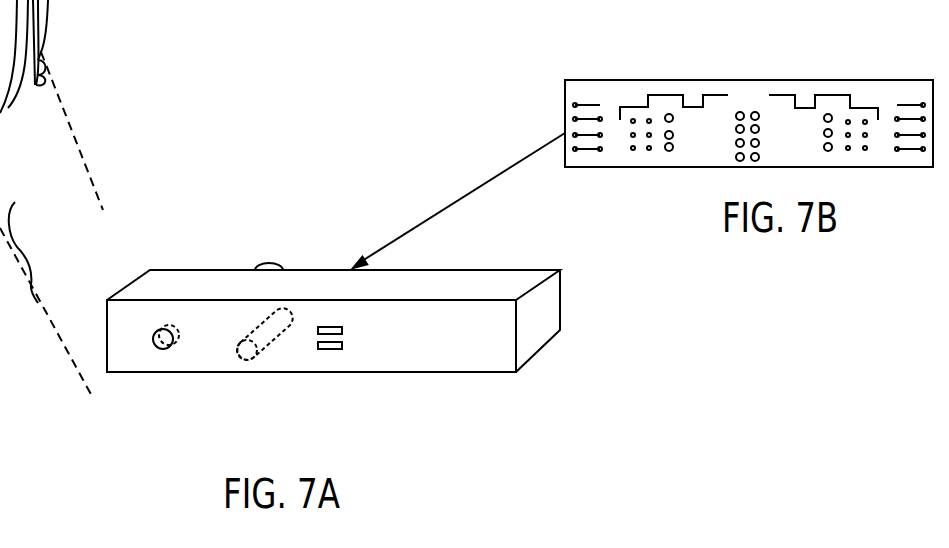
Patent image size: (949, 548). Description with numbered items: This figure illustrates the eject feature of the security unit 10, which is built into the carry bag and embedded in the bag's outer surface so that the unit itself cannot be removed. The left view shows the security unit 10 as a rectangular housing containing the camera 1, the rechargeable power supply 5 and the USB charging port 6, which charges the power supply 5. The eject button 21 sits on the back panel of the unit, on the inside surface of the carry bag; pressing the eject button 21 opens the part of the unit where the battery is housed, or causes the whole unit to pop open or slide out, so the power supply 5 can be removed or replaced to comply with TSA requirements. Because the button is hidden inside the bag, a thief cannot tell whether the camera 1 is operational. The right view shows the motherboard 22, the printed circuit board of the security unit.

In FIG. 7A, the security unit 10 is at (107, 415).
In FIG. 7A, the eject button 21 is at (273, 263).
In FIG. 7A, the rechargeable power supply 5 is at (251, 330).
In FIG. 7A, the camera 1 is at (160, 349).
In FIG. 7A, the USB charging port 6 is at (338, 350).
In FIG. 7B, the motherboard 22 is at (863, 77).